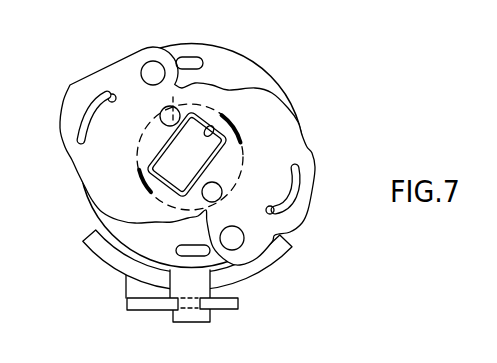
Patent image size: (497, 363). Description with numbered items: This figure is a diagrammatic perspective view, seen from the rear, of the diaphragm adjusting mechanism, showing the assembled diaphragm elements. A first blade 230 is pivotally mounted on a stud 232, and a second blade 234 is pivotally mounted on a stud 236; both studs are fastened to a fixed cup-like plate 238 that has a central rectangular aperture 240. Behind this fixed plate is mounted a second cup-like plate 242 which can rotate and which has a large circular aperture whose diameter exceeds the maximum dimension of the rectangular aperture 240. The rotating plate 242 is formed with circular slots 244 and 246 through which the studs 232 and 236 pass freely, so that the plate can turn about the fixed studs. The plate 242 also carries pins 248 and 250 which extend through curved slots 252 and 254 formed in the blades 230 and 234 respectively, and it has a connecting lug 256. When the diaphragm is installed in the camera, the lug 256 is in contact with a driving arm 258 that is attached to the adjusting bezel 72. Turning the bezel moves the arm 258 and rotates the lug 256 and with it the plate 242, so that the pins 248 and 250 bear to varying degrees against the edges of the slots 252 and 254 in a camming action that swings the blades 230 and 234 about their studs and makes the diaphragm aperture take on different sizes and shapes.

The adjusting bezel 72 is at (110, 262).
The first blade 230 is at (127, 161).
The stud 232 is at (155, 70).
The second blade 234 is at (264, 175).
The stud 236 is at (232, 236).
The fixed cup-like plate 238 is at (233, 139).
The central rectangular aperture 240 is at (211, 132).
The second cup-like plate 242 is at (108, 222).
The circular slot 244 is at (201, 60).
The circular slot 246 is at (176, 252).
The pin 248 is at (111, 95).
The pin 250 is at (274, 210).
The curved slot 252 is at (77, 126).
The curved slot 254 is at (300, 185).
The connecting lug 256 is at (205, 311).
The driving arm 258 is at (160, 302).